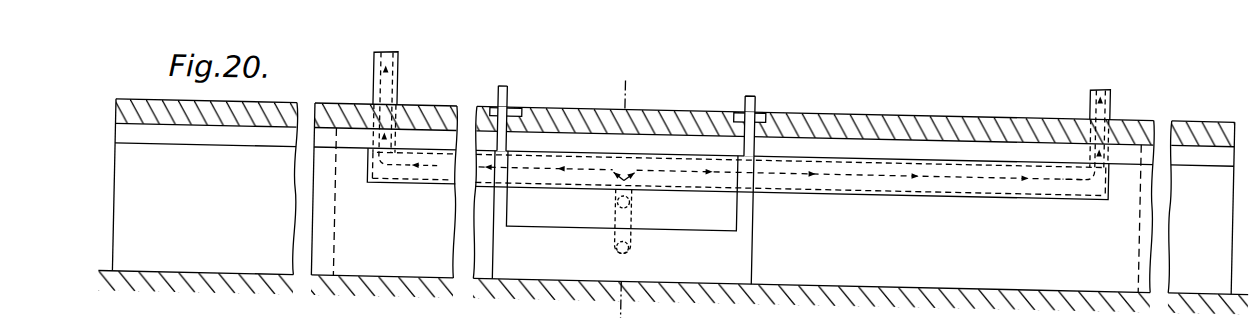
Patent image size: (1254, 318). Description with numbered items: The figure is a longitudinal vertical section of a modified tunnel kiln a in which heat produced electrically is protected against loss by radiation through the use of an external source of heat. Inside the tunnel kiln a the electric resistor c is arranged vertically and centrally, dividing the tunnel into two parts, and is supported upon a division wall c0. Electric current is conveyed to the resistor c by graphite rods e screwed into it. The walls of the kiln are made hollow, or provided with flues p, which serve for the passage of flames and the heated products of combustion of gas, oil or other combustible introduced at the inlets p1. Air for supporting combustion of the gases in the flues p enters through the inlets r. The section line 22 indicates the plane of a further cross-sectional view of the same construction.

The tunnel kiln a is at (205, 187).
The graphite rod e is at (505, 93).
The section line 22 is at (626, 188).
The flue p is at (852, 178).
The electric resistor c is at (729, 217).
The division wall c0 is at (753, 261).
The air inlet r is at (630, 202).
The inlet p1 is at (630, 248).